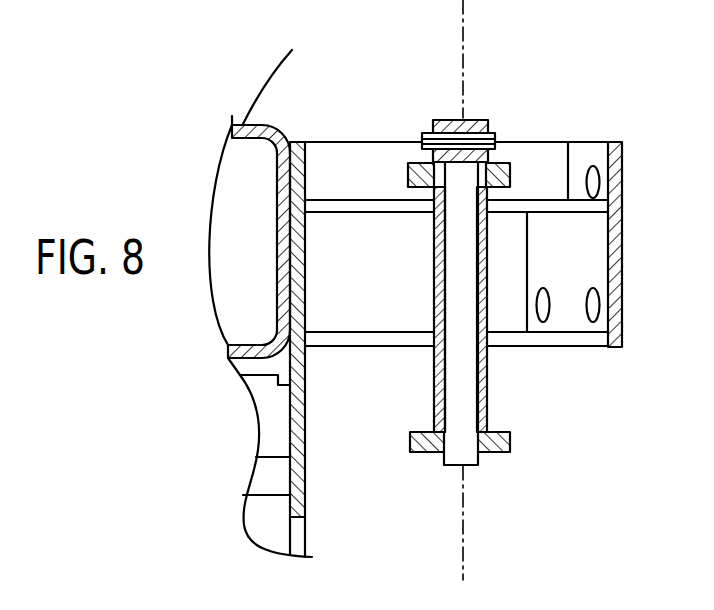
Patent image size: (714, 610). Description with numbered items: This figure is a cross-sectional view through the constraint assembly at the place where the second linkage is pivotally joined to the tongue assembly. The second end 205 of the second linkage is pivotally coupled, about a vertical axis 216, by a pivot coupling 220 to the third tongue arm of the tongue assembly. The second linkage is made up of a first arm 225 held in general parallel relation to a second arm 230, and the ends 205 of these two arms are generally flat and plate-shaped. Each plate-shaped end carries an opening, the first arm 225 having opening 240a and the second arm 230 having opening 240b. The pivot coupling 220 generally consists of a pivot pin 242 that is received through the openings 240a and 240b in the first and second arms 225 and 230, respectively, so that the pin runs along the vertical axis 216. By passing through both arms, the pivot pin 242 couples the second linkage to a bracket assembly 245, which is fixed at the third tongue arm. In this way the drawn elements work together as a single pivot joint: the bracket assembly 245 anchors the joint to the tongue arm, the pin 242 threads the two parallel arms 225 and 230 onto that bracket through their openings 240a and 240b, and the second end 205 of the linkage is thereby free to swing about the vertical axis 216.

The second end 205 is at (410, 468).
The vertical axis 216 is at (463, 572).
The pivot coupling 220 is at (486, 104).
The first arm 225 is at (497, 172).
The second arm 230 is at (508, 442).
The opening 240a is at (492, 186).
The opening 240b is at (488, 433).
The pivot pin 242 is at (480, 463).
The bracket assembly 245 is at (342, 352).